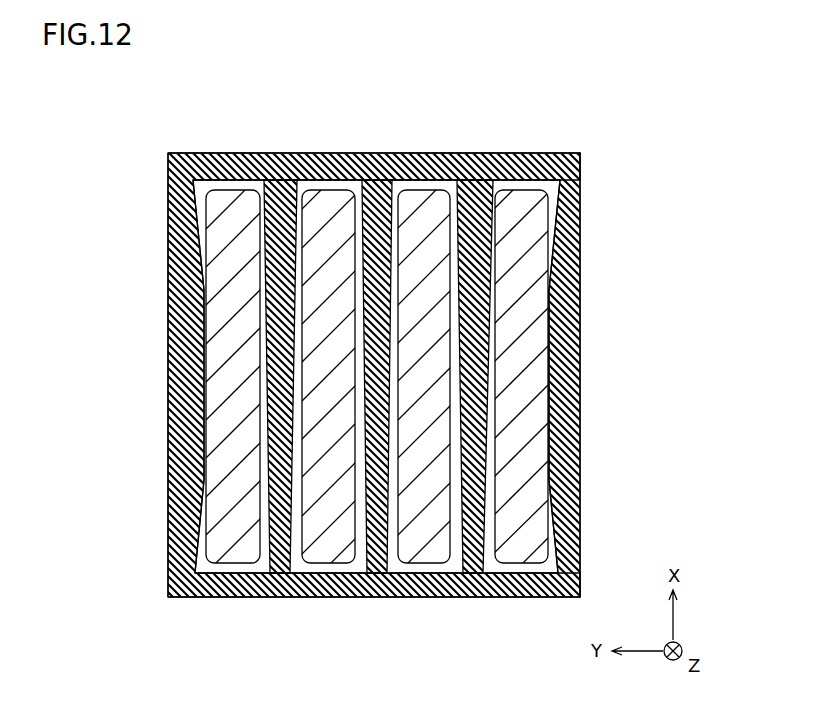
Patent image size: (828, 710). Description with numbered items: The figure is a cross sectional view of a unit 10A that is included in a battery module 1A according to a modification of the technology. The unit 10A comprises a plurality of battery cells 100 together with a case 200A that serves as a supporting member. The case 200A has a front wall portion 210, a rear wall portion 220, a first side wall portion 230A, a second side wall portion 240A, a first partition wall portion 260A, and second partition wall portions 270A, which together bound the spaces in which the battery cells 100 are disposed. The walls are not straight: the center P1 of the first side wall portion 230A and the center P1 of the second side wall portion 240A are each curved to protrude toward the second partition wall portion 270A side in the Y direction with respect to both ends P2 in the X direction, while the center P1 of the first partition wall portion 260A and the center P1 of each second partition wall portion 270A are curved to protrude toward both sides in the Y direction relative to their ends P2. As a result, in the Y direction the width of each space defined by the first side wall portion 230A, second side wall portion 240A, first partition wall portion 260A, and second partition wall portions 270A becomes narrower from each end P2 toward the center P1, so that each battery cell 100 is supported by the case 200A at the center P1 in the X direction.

The battery module 1A is at (375, 361).
The unit 10A is at (375, 373).
The case 200A is at (375, 373).
The front wall portion 210 is at (408, 171).
The rear wall portion 220 is at (378, 580).
The first side wall portion 230A is at (180, 332).
The second side wall portion 240A is at (562, 332).
The first partition wall portion 260A is at (370, 240).
The second partition wall portion 270A is at (280, 235).
The battery cell 100 is at (518, 430).
The center P1 is at (157, 374).
The both ends P2 is at (157, 178).